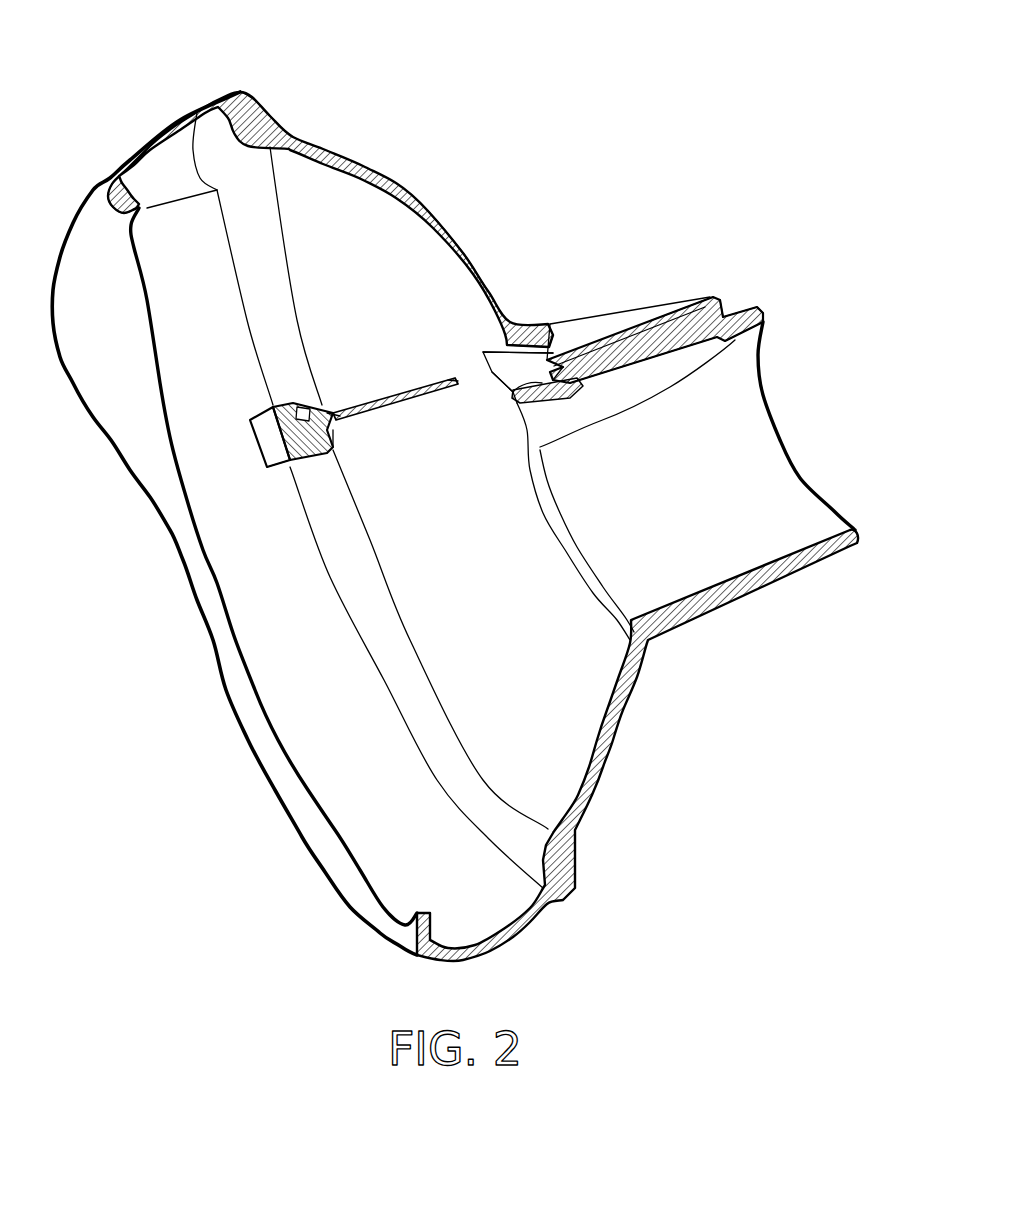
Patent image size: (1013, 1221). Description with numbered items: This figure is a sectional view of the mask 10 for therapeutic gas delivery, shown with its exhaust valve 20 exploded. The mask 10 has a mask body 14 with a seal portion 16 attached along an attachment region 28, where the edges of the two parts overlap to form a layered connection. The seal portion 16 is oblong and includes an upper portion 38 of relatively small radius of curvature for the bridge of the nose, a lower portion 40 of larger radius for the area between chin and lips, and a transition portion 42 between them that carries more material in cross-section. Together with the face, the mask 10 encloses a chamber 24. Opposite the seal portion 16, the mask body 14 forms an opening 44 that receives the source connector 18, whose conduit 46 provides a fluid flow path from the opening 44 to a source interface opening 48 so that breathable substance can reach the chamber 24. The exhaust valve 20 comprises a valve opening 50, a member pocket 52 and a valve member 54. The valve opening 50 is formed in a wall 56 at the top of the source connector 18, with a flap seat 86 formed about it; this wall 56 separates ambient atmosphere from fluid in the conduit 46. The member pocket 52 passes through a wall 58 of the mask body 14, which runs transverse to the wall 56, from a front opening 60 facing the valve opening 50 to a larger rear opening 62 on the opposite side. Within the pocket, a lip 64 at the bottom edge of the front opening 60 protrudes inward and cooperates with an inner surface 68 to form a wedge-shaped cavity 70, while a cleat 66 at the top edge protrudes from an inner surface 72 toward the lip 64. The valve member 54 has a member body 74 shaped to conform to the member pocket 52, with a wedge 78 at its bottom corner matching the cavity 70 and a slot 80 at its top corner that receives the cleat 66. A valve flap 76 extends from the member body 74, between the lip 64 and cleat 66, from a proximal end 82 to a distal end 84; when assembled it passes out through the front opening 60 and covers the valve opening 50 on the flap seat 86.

The mask 10 is at (744, 84).
The mask body 14 is at (393, 182).
The seal portion 16 is at (170, 223).
The source connector 18 is at (743, 588).
The exhaust valve 20 is at (674, 226).
The chamber 24 is at (147, 558).
The attachment region 28 is at (197, 113).
The upper portion 38 is at (90, 242).
The lower portion 40 is at (363, 880).
The transition portion 42 is at (210, 627).
The opening 44 is at (573, 567).
The conduit 46 is at (637, 423).
The source interface opening 48 is at (790, 420).
The valve opening 50 is at (630, 328).
The member pocket 52 is at (517, 360).
The valve member 54 is at (250, 420).
The wall 56 is at (744, 306).
The wall 58 is at (468, 264).
The front opening 60 is at (575, 323).
The rear opening 62 is at (500, 383).
The lip 64 is at (598, 368).
The cleat 66 is at (560, 323).
The inner surface 68 is at (510, 403).
The cavity 70 is at (590, 388).
The inner surface 72 is at (530, 323).
The member body 74 is at (312, 468).
The valve flap 76 is at (395, 396).
The wedge 78 is at (335, 440).
The slot 80 is at (299, 407).
The proximal end 82 is at (336, 412).
The distal end 84 is at (457, 380).
The flap seat 86 is at (687, 306).